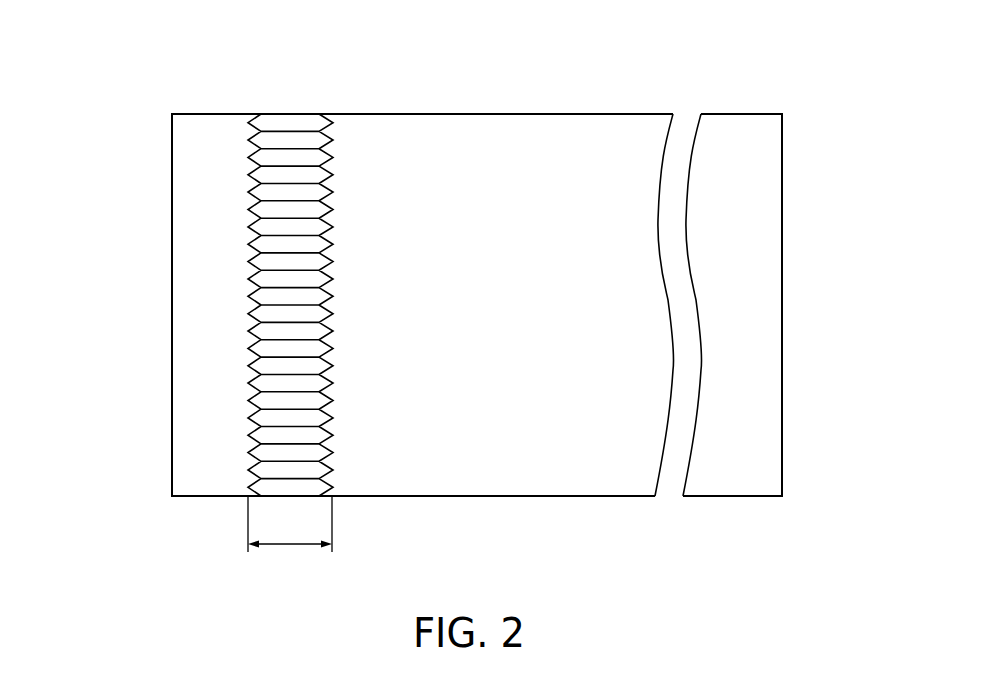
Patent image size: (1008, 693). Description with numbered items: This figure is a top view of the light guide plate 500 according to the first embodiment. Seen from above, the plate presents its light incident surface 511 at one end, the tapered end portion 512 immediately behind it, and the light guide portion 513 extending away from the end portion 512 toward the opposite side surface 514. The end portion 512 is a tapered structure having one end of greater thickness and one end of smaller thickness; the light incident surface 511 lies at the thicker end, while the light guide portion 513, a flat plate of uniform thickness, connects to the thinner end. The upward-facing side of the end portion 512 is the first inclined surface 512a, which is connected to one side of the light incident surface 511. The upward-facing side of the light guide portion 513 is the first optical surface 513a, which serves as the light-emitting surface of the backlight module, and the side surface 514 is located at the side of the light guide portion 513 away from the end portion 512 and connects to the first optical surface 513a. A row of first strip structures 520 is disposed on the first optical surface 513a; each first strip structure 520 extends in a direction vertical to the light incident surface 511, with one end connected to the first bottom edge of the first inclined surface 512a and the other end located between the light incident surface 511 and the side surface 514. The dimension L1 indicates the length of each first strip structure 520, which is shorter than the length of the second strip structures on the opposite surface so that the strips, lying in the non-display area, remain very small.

The light guide plate 500 is at (90, 37).
The light incident surface 511 is at (172, 268).
The end portion 512 is at (203, 112).
The first inclined surface 512a is at (240, 307).
The light guide portion 513 is at (562, 97).
The first optical surface 513a is at (550, 308).
The side surface 514 is at (782, 297).
The first strip structures 520 is at (288, 120).
The length of each first strip structure L1 is at (290, 524).